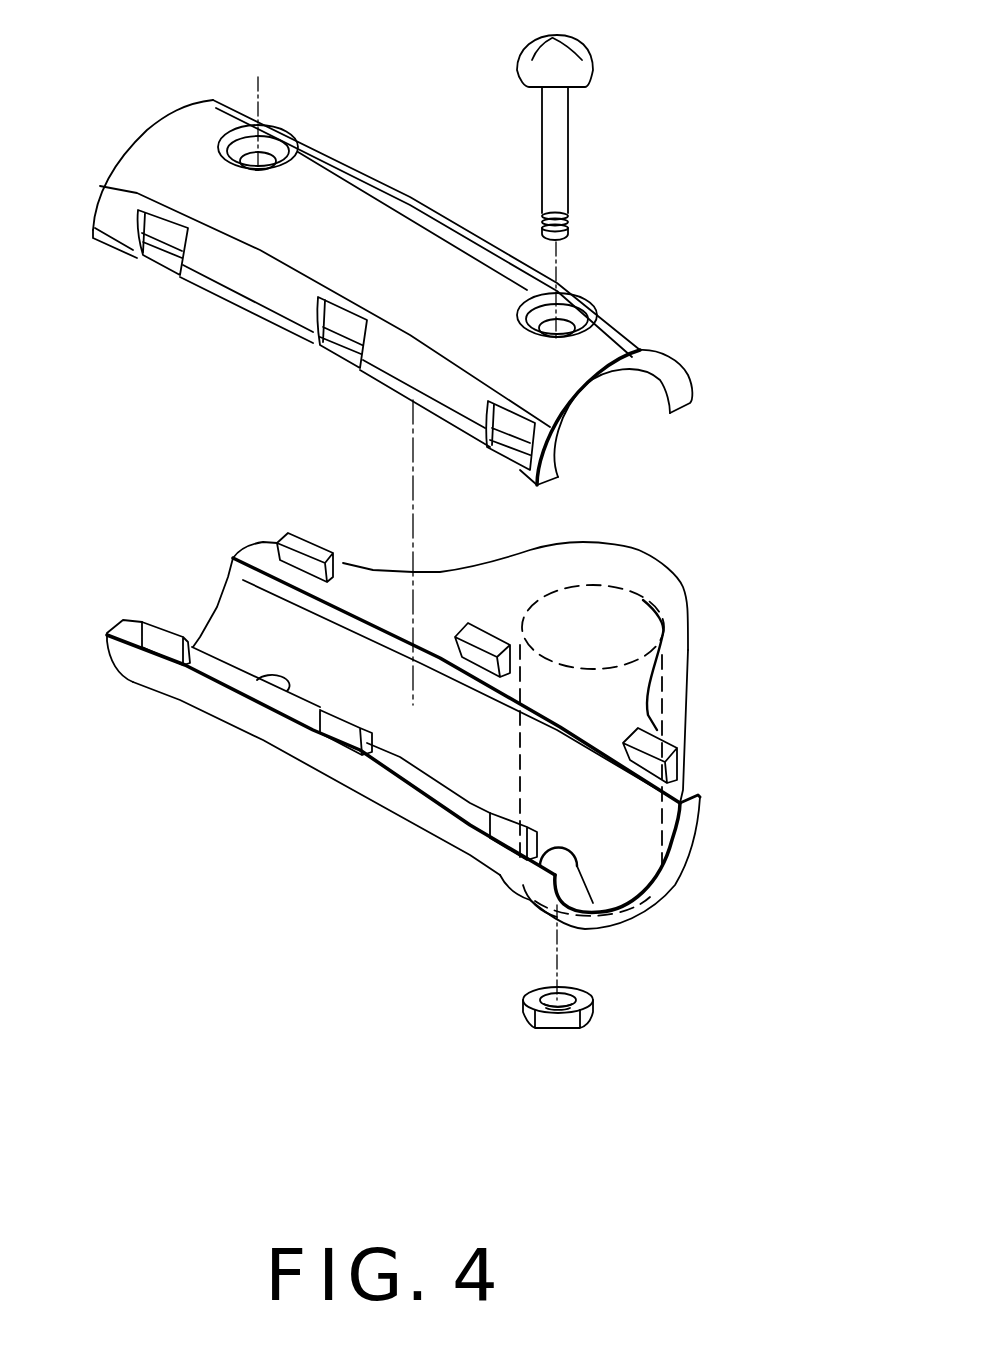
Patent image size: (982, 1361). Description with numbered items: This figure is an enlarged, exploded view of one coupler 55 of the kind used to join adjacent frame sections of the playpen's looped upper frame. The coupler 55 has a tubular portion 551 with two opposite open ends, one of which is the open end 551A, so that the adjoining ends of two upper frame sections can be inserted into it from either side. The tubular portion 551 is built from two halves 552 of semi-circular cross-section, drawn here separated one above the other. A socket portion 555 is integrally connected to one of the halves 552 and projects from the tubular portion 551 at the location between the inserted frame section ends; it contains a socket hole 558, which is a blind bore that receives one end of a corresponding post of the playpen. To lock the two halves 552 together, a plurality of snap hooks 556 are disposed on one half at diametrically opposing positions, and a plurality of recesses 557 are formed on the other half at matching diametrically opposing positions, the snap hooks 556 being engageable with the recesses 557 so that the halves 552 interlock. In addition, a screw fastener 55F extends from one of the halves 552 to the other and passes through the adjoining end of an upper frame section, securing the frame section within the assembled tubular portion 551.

The coupler 55 is at (468, 721).
The screw fastener 55F is at (582, 60).
The tubular portion 551 is at (431, 249).
The open end 551A is at (158, 125).
The half 552 is at (447, 839).
The socket portion 555 is at (693, 730).
The snap hook 556 is at (340, 744).
The recess 557 is at (337, 323).
The socket hole 558 is at (643, 597).